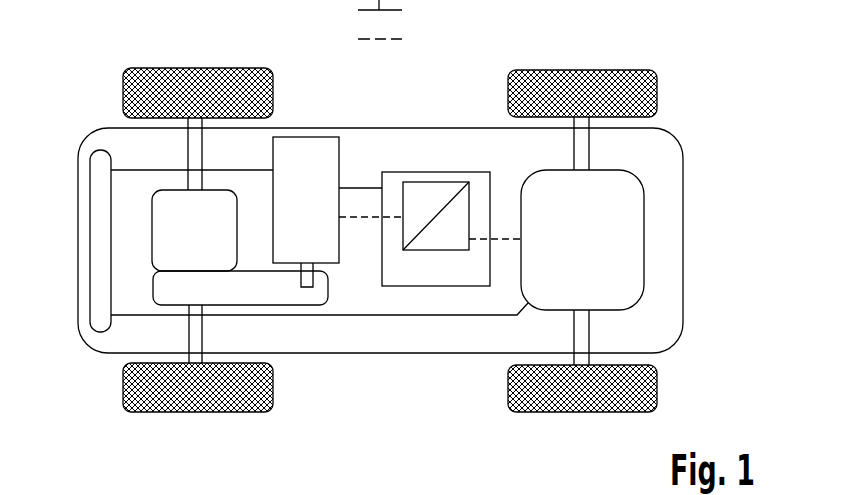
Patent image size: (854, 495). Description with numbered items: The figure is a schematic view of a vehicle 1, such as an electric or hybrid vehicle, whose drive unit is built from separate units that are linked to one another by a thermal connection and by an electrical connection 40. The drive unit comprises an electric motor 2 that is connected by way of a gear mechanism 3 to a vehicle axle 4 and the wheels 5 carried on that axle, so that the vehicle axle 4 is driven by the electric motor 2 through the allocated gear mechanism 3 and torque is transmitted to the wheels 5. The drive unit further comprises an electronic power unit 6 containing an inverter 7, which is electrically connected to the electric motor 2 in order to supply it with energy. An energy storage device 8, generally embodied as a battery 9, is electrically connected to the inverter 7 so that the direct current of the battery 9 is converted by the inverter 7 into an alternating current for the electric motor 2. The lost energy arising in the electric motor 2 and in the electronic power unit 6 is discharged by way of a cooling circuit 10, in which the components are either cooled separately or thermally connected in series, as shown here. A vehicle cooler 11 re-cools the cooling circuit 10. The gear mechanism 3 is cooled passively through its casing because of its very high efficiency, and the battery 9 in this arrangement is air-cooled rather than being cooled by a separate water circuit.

The vehicle 1 is at (84, 106).
The electric motor 2 is at (305, 150).
The gear mechanism 3 is at (138, 219).
The vehicle axle 4 is at (190, 335).
The wheels 5 is at (195, 86).
The electronic power unit 6 is at (426, 298).
The inverter 7 is at (443, 190).
The energy storage device 8 is at (660, 279).
The battery 9 is at (628, 240).
The cooling circuit 10 is at (376, 326).
The vehicle cooler 11 is at (95, 243).
The electrical connection 40 is at (379, 41).